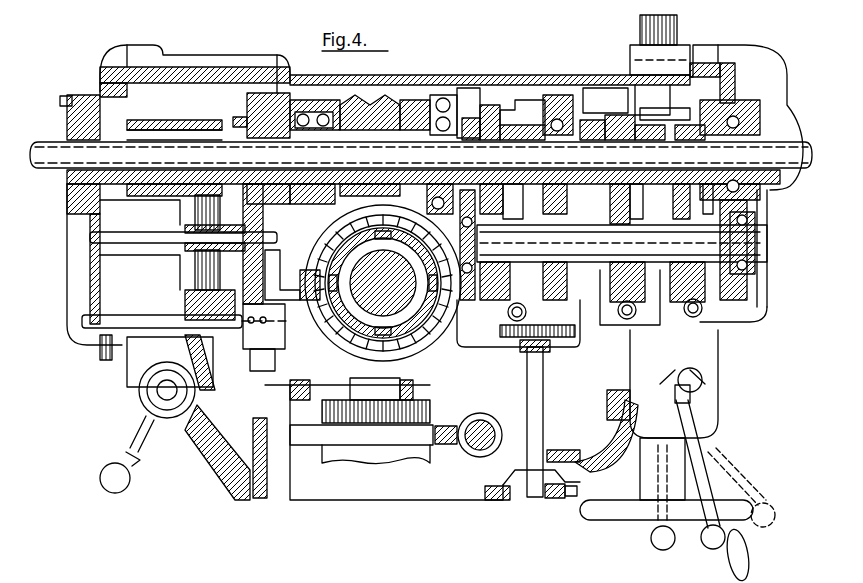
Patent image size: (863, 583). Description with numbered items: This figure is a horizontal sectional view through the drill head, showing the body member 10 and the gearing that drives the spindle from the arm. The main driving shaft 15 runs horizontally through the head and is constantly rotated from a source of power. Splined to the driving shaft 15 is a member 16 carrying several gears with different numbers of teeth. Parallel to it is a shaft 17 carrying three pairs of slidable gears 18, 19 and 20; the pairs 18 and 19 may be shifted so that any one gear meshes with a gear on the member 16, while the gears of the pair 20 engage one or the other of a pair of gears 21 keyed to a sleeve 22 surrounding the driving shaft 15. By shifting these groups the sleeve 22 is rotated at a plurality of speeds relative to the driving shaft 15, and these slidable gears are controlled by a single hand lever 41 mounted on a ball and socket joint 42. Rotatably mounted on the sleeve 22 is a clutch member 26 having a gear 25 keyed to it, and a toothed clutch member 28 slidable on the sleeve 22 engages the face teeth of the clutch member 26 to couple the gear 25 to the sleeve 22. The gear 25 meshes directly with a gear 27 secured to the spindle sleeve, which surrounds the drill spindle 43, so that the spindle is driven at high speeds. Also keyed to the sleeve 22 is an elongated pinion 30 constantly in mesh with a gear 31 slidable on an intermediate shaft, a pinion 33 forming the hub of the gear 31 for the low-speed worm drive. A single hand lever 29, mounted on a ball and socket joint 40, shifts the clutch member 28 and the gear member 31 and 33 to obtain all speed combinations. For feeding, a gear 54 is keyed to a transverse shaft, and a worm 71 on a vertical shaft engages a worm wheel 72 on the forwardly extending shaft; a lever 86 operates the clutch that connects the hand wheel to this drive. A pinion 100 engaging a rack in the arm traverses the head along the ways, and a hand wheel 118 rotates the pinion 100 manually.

The body member 10 is at (620, 75).
The pinion 100 is at (677, 30).
The main driving shaft 15 is at (500, 152).
The elongated pinion 30 is at (166, 124).
The toothed clutch member 28 is at (257, 112).
The clutch member 26 is at (296, 104).
The gear 25 is at (398, 98).
The sleeve 22 is at (470, 126).
The pair of gears 21 is at (487, 106).
The member 16 is at (597, 120).
The gear 31 is at (205, 284).
The drill spindle 43 is at (330, 330).
The pinion 33 is at (335, 290).
The gear 27 is at (333, 228).
The pair of slidable gears 20 is at (483, 332).
The pair of slidable gears 19 is at (602, 324).
The shaft 17 is at (717, 240).
The pair of slidable gears 18 is at (707, 277).
The lever 86 is at (545, 497).
The gear 54 is at (430, 405).
The worm wheel 72 is at (448, 446).
The worm 71 is at (483, 418).
The ball and socket joint 40 is at (148, 392).
The hand lever 29 is at (110, 465).
The ball and socket joint 42 is at (690, 382).
The hand lever 41 is at (690, 465).
The hand wheel 118 is at (622, 508).